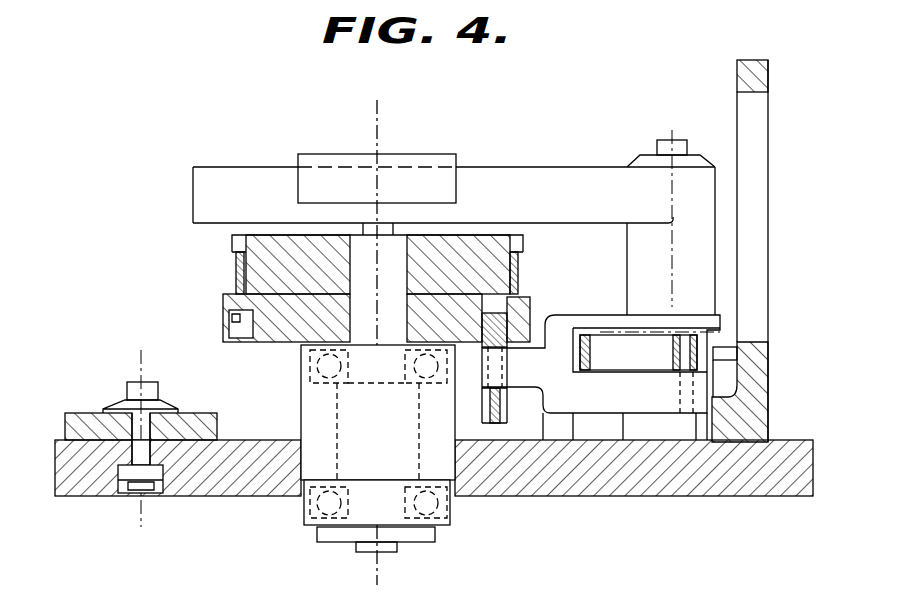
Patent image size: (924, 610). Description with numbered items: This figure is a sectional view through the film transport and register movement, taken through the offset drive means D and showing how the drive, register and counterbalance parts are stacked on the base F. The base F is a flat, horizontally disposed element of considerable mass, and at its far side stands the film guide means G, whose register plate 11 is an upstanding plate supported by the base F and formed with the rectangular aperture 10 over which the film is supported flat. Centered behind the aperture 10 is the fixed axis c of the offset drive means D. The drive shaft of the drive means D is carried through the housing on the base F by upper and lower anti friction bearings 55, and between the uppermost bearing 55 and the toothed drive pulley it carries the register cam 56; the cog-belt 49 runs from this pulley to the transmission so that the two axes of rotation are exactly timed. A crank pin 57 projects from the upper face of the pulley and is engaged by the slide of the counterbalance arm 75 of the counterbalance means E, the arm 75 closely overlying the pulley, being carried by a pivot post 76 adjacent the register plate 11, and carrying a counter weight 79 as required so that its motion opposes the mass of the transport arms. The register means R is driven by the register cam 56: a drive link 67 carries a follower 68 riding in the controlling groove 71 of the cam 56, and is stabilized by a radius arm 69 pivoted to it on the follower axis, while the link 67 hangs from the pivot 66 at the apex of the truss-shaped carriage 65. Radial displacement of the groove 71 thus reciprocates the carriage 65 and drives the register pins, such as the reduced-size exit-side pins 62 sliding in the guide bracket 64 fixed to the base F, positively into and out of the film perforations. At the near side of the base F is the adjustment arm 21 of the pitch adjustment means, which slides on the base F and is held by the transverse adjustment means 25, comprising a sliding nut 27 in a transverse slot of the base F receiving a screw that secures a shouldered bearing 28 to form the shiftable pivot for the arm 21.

The aperture 10 is at (762, 97).
The register plate 11 is at (737, 80).
The adjustment arm 21 is at (85, 413).
The transverse adjustment means 25 is at (152, 393).
The sliding nut 27 is at (158, 482).
The shouldered bearing 28 is at (152, 424).
The cog-belt 49 is at (518, 272).
The anti friction bearings 55 is at (310, 366).
The register cam 56 is at (223, 296).
The crank pin 57 is at (395, 230).
The register pins 62 is at (768, 347).
The guide bracket 64 is at (672, 430).
The carriage 65 is at (607, 335).
The pivot 66 is at (684, 335).
The drive link 67 is at (625, 397).
The follower 68 is at (493, 340).
The radius arm 69 is at (483, 428).
The controlling groove 71 is at (232, 318).
The counterbalance arm 75 is at (232, 165).
The counter weight 79 is at (340, 165).
The pivot post 76 is at (660, 140).
The fixed axis c is at (380, 127).
The offset drive means D is at (224, 291).
The counterbalance means E is at (522, 165).
The base F is at (590, 482).
The film guide means G is at (776, 58).
The register means R is at (667, 393).